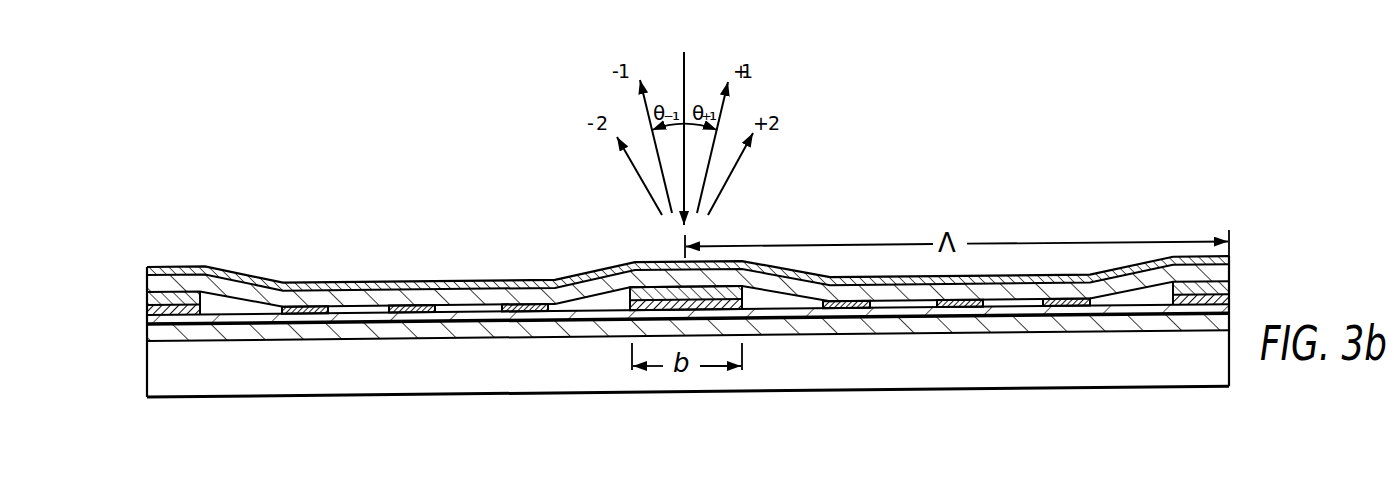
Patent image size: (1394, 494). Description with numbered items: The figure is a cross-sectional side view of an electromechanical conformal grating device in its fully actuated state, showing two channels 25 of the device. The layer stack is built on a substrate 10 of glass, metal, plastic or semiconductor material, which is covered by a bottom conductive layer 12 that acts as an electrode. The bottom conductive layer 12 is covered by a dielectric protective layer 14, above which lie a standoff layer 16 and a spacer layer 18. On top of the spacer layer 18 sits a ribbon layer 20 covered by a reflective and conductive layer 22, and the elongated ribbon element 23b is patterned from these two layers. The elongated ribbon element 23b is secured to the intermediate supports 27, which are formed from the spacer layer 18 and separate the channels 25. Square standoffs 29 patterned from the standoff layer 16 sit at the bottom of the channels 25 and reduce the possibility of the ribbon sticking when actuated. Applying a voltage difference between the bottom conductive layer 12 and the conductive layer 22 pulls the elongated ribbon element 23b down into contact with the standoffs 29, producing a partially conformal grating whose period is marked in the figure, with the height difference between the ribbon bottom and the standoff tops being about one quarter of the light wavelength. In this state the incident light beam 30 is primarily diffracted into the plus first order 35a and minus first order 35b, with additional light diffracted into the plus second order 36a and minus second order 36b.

The substrate 10 is at (207, 383).
The bottom conductive layer 12 is at (147, 345).
The dielectric protective layer 14 is at (147, 322).
The standoff layer 16 is at (147, 312).
The spacer layer 18 is at (147, 297).
The ribbon layer 20 is at (150, 281).
The reflective and conductive layer 22 is at (178, 267).
The elongated ribbon element 23b is at (381, 282).
The channel 25 is at (607, 308).
The intermediate support 27 is at (657, 262).
The standoffs 29 is at (308, 316).
The incident light beam 30 is at (684, 72).
The +1st order diffracted light 35a is at (722, 112).
The -1st order diffracted light 35b is at (650, 125).
The +2nd order diffracted light 36a is at (731, 172).
The -2nd order diffracted light 36b is at (636, 172).